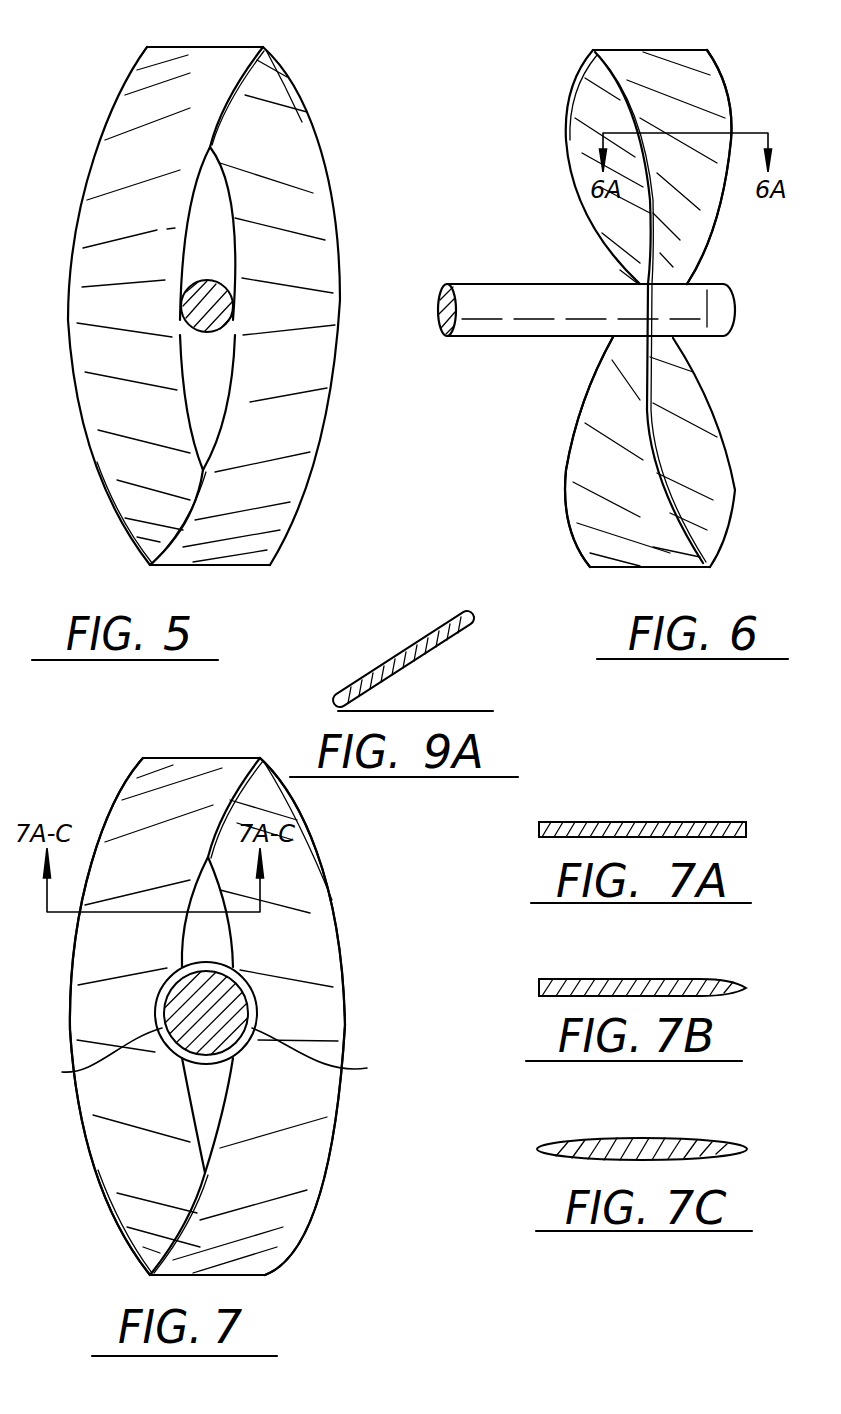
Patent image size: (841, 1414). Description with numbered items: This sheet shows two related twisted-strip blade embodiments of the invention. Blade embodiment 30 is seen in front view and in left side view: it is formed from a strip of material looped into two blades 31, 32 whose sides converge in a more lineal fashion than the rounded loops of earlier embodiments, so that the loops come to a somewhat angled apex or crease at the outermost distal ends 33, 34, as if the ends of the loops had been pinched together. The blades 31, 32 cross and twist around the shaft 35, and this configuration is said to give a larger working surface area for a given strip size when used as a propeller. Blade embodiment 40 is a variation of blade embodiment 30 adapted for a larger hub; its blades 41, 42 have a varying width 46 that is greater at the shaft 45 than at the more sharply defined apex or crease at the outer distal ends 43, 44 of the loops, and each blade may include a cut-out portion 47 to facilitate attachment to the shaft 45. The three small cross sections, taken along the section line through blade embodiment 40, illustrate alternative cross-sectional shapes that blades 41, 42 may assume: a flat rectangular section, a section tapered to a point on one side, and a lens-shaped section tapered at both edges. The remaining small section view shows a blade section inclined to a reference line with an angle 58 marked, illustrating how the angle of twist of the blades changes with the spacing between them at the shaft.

In FIG. 5, the blade embodiment 30 is at (342, 182).
In FIG. 6, the blade embodiment 30 is at (566, 420).
In FIG. 6, the blade 31 is at (713, 97).
In FIG. 6, the blade 32 is at (582, 505).
In FIG. 5, the outermost distal end 33 is at (230, 47).
In FIG. 6, the outermost distal end 33 is at (614, 50).
In FIG. 5, the outermost distal end 34 is at (232, 565).
In FIG. 6, the outermost distal end 34 is at (640, 568).
In FIG. 5, the shaft 35 is at (235, 313).
In FIG. 6, the shaft 35 is at (533, 295).
In FIG. 7, the blade embodiment 40 is at (362, 1025).
In FIG. 7, the blade 41 is at (120, 1152).
In FIG. 7, the blade 42 is at (313, 1145).
In FIG. 7, the outer distal end 43 is at (180, 757).
In FIG. 7, the outer distal end 44 is at (255, 1276).
In FIG. 7, the shaft 45 is at (240, 1002).
In FIG. 7, the width 46 is at (235, 935).
In FIG. 7, the cut-out portion 47 is at (215, 1061).
In FIG. 9A, the pitch angle 58 is at (436, 657).